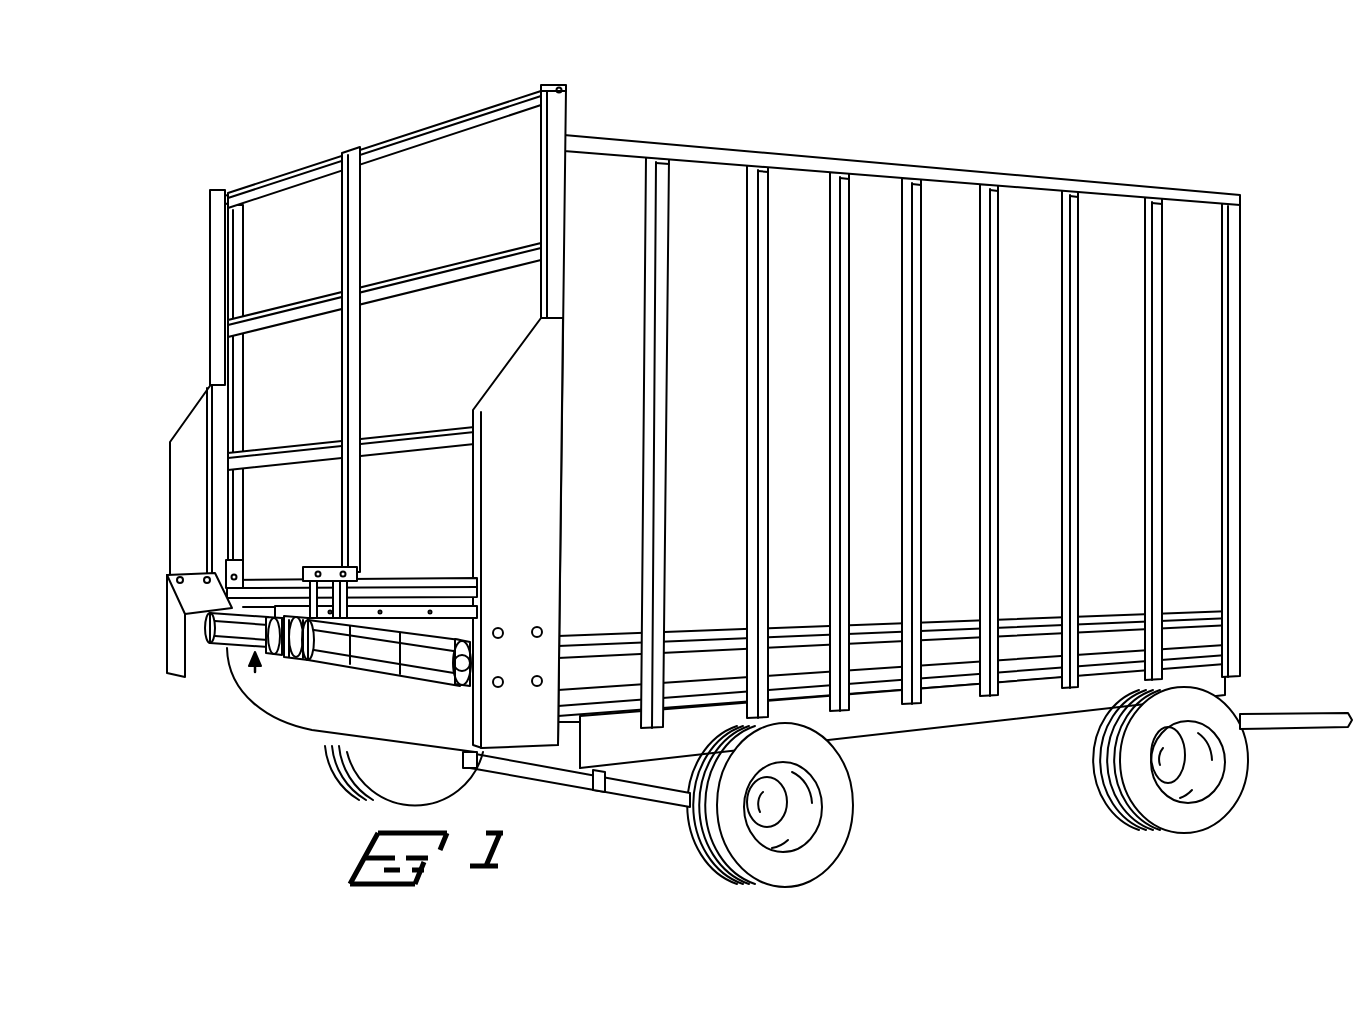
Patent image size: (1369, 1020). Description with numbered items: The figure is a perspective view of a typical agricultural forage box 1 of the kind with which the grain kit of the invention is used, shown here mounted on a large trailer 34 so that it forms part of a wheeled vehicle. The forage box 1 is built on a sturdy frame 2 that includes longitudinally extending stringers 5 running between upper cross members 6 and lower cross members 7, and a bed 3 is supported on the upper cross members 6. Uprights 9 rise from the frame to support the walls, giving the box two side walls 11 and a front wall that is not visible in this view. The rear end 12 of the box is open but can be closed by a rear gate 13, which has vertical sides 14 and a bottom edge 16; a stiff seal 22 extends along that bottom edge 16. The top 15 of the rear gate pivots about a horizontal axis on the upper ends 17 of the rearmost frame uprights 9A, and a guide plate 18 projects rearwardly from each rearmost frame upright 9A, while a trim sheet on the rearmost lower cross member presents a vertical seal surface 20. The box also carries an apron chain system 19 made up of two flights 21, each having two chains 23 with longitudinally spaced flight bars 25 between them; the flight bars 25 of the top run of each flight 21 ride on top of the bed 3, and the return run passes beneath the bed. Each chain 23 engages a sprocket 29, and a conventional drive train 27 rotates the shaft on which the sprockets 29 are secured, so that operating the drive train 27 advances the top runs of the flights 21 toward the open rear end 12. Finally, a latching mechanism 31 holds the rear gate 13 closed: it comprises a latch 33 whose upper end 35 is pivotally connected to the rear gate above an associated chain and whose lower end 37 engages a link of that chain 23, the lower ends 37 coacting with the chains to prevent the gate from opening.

The forage box 1 is at (703, 142).
The frame 2 is at (915, 703).
The bed 3 is at (452, 625).
The stringers 5 is at (962, 652).
The upper cross members 6 is at (1185, 612).
The lower cross members 7 is at (890, 688).
The uprights 9 is at (768, 192).
The rearmost frame uprights 9A is at (568, 112).
The side walls 11 is at (893, 192).
The rear end 12 is at (432, 118).
The rear gate 13 is at (347, 150).
The vertical sides 14 is at (212, 256).
The top 15 is at (268, 178).
The bottom edge 16 is at (356, 628).
The upper ends 17 is at (552, 85).
The guide plate 18 is at (528, 449).
The apron chain system 19 is at (255, 672).
The vertical seal surface 20 is at (336, 726).
The flights 21 is at (262, 606).
The stiff seal 22 is at (412, 640).
The chains 23 is at (212, 630).
The flight bars 25 is at (262, 655).
The drive train 27 is at (168, 598).
The sprocket 29 is at (300, 662).
The latching mechanism 31 is at (350, 588).
The latch 33 is at (360, 605).
The trailer 34 is at (663, 801).
The upper end 35 is at (343, 570).
The lower end 37 is at (268, 556).